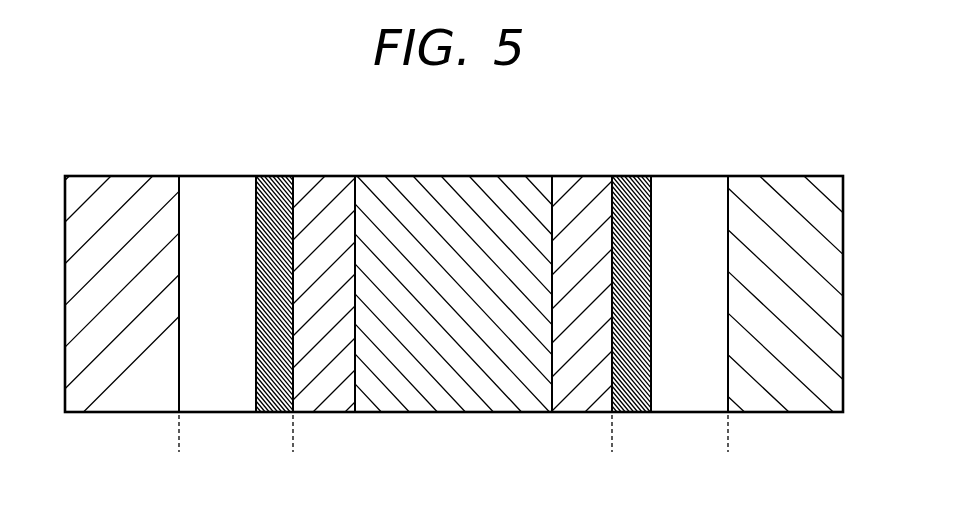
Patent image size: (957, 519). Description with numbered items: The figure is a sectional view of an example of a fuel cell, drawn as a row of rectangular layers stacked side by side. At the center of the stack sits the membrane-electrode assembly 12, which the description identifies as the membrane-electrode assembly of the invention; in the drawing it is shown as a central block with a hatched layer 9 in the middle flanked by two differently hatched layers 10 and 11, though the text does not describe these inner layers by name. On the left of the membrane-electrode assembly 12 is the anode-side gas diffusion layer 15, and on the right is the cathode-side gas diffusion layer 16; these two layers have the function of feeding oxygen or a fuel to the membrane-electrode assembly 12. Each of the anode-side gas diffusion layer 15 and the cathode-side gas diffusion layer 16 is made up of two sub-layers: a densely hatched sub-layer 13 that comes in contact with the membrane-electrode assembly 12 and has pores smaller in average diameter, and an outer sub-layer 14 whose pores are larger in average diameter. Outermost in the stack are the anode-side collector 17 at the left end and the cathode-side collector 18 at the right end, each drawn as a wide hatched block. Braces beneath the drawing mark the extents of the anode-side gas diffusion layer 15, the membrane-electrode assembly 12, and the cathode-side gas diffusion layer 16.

The first semiconductor layer 9 is at (455, 190).
The second semiconductor layer 10 is at (320, 190).
The third semiconductor layer 11 is at (583, 190).
The membrane-electrode assembly 12 is at (293, 452).
The sub-layer 13 is at (281, 184).
The sub-layer 14 is at (215, 190).
The anode-side gas diffusion layer 15 is at (179, 452).
The cathode-side gas diffusion layer 16 is at (612, 452).
The anode-side collector 17 is at (127, 190).
The cathode-side collector 18 is at (780, 190).